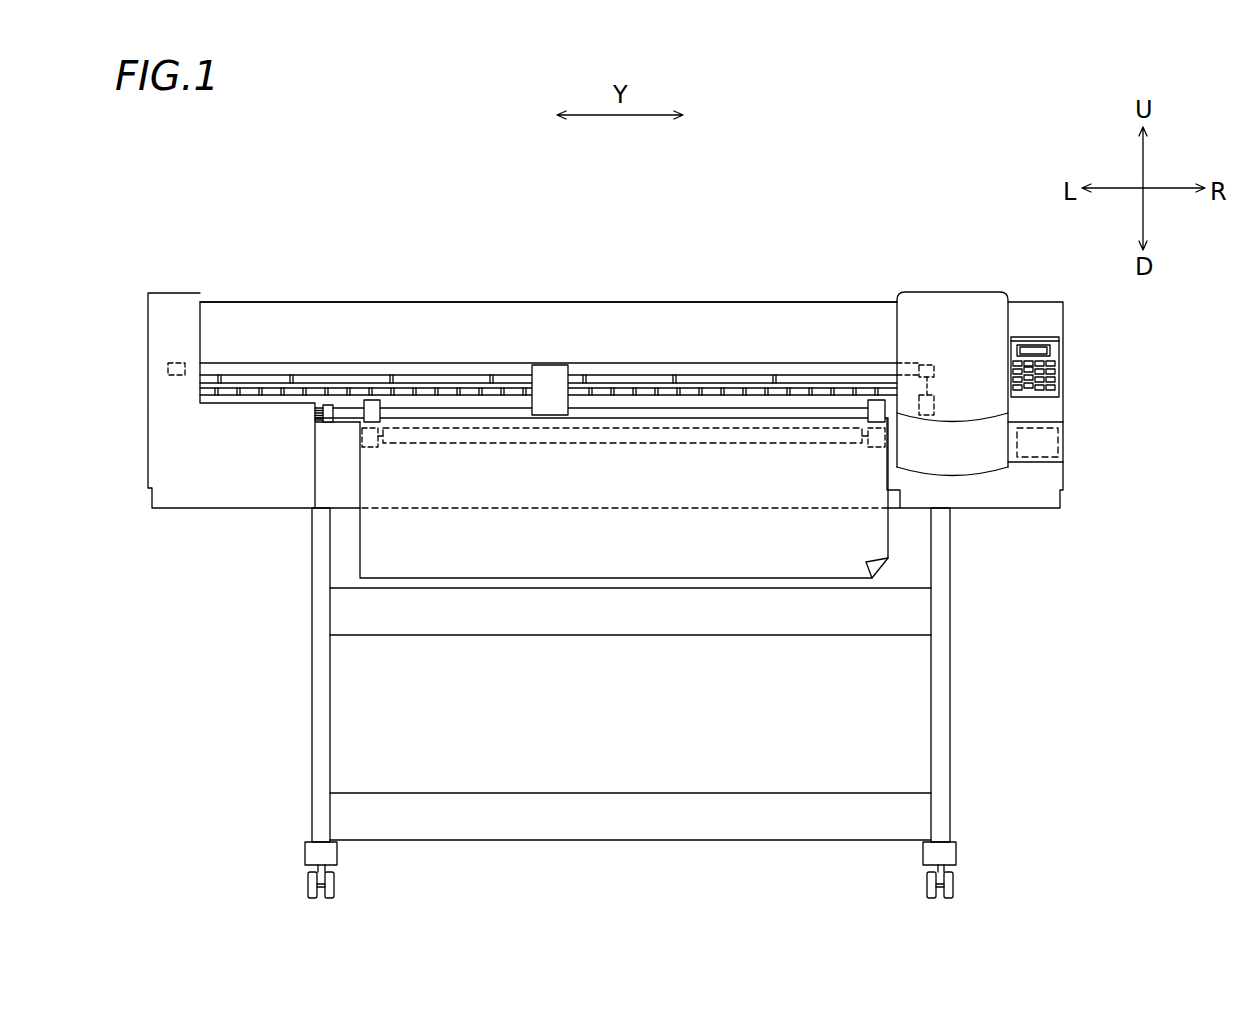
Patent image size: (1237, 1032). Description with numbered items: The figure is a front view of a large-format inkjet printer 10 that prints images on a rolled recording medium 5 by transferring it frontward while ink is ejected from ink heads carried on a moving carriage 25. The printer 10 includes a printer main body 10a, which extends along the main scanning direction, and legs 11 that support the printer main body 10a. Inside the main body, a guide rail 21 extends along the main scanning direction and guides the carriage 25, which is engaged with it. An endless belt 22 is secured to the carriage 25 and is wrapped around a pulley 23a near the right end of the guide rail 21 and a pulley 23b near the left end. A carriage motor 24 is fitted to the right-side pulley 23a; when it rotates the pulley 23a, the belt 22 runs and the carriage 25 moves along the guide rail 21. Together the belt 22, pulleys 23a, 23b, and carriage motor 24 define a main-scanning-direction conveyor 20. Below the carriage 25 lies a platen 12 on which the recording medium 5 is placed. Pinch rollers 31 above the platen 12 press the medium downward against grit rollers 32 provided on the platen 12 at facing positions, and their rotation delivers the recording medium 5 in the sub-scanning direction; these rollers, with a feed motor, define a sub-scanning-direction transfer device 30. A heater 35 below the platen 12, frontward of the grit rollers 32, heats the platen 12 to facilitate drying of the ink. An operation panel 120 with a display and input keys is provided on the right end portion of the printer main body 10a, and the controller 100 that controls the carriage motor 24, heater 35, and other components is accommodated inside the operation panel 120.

The printer 10 is at (183, 198).
The printer main body 10a is at (247, 298).
The legs 11 is at (318, 743).
The platen 12 is at (328, 492).
The recording medium 5 is at (378, 550).
The main-scanning-direction conveyor 20 is at (930, 198).
The guide rail 21 is at (336, 402).
The belt 22 is at (500, 370).
The pulley 23a is at (927, 365).
The pulley 23b is at (178, 362).
The carriage motor 24 is at (934, 405).
The carriage 25 is at (548, 377).
The sub-scanning-direction transfer device 30 is at (443, 220).
The pinch rollers 31 is at (374, 400).
The grit rollers 32 is at (385, 433).
The heater 35 is at (750, 428).
The controller 100 is at (1058, 442).
The operation panel 120 is at (1023, 335).